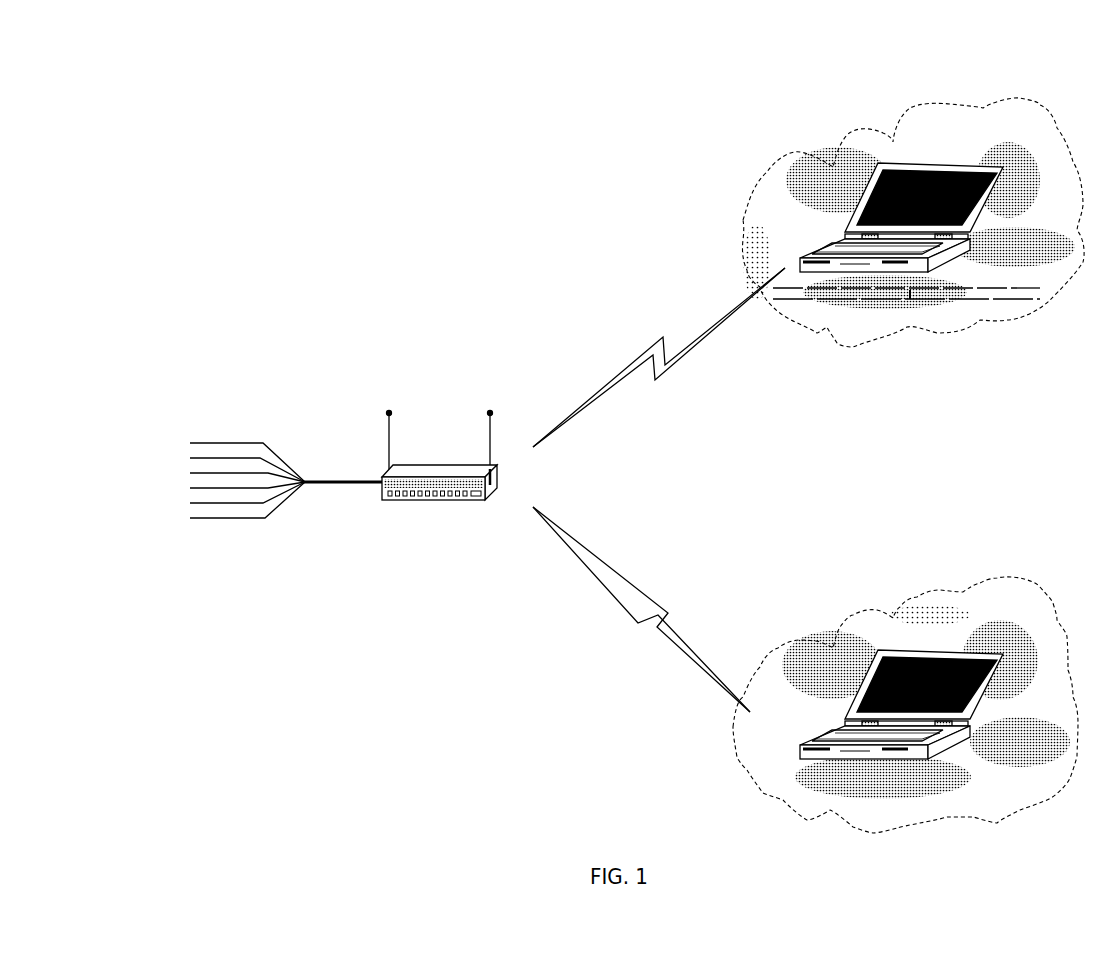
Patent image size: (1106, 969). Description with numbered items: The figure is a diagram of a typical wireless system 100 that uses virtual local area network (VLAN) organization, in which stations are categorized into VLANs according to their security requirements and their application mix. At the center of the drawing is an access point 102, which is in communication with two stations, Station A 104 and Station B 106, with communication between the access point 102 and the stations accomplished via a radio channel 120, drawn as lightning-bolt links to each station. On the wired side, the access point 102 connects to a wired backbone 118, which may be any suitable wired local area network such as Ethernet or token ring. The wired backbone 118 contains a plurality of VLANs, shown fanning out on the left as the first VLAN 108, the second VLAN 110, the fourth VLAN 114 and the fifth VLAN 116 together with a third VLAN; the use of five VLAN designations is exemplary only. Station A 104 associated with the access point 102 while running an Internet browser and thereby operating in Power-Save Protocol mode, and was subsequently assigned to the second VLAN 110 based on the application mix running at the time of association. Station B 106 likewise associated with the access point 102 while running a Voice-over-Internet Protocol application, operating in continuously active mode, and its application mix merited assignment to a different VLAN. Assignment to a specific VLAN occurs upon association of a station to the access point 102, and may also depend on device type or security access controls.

The 802.11 system 100 is at (650, 91).
The access point 102 is at (447, 463).
The Station A 104 is at (915, 272).
The Station B 106 is at (901, 717).
The VLAN 1 108 is at (194, 452).
The VLAN 2 110 is at (1033, 110).
The VLAN 4 114 is at (194, 497).
The VLAN 5 116 is at (194, 512).
The wired backbone 118 is at (335, 480).
The radio channel 120 is at (667, 369).